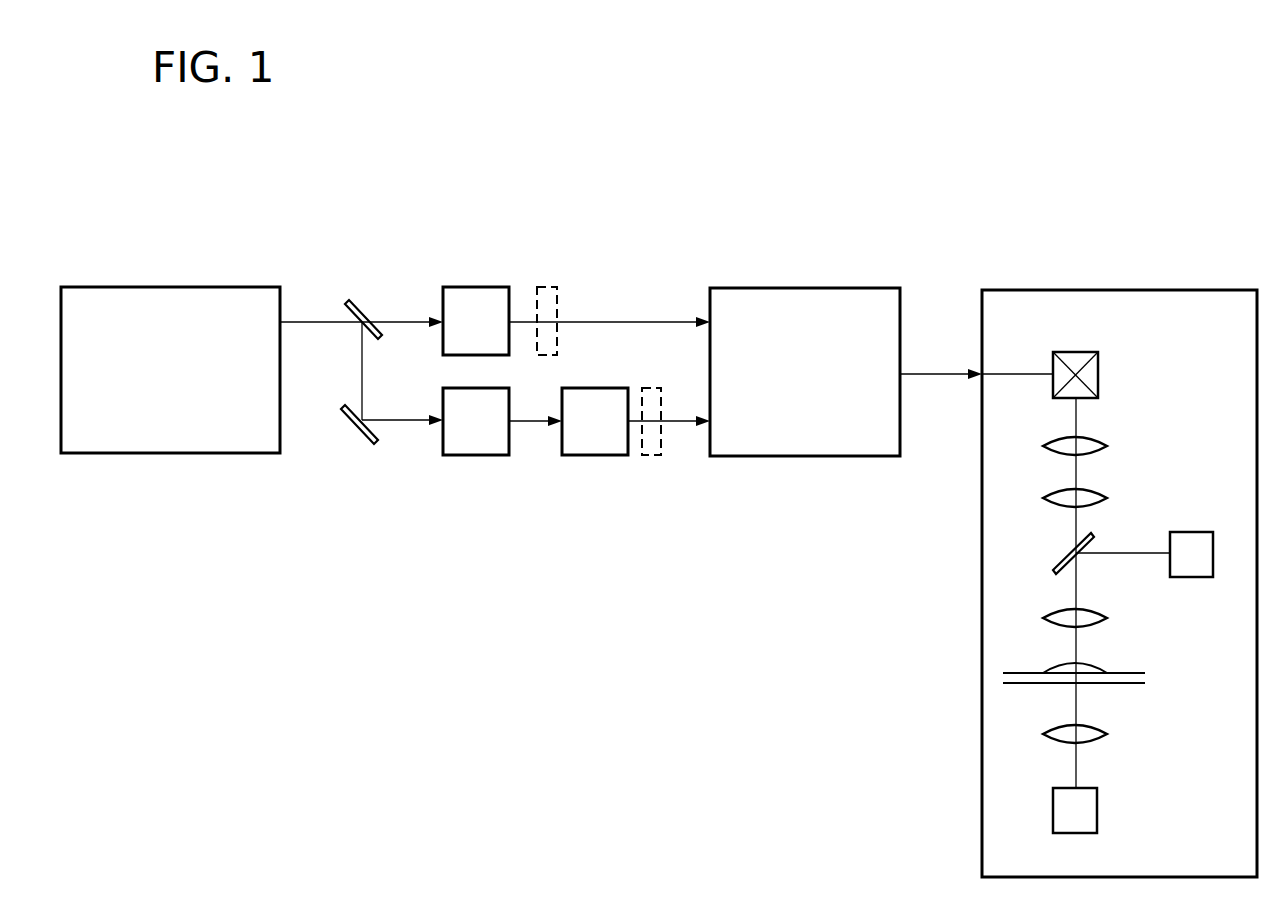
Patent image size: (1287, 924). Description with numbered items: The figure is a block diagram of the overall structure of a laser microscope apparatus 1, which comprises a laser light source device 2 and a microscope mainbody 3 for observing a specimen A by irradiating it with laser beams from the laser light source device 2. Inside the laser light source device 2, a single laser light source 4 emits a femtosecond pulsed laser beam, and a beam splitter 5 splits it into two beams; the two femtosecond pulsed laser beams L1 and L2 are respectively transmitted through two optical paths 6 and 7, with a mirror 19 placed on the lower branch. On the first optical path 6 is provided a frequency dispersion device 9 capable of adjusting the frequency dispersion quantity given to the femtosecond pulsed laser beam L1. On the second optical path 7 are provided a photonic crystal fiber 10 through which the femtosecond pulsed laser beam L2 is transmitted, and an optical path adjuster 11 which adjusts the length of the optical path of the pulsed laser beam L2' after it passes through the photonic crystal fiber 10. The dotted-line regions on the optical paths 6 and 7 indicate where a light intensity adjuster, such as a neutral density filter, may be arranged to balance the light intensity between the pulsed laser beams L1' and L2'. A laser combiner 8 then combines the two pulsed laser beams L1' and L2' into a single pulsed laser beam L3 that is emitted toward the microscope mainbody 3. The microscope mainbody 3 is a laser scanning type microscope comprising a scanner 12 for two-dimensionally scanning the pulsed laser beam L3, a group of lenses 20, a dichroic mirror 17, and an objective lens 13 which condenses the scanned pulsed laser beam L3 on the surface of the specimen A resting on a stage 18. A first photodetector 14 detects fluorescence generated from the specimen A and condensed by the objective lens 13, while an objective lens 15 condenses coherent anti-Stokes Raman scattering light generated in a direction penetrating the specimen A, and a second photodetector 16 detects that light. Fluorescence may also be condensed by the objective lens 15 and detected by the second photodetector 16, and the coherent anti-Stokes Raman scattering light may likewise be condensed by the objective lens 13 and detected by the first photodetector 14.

The laser microscope apparatus 1 is at (1128, 181).
The laser light source device 2 is at (610, 135).
The microscope mainbody 3 is at (1207, 277).
The laser light source 4 is at (170, 287).
The beam splitter 5 is at (356, 300).
The first optical path 6 is at (427, 163).
The second optical path 7 is at (442, 508).
The laser combiner 8 is at (812, 288).
The frequency dispersion device 9 is at (475, 287).
The photonic crystal fiber 10 is at (478, 455).
The optical path adjuster 11 is at (595, 457).
The scanner 12 is at (1098, 375).
The objective lens 13 is at (1055, 614).
The first photodetector 14 is at (1195, 578).
The objective lens 15 is at (1107, 734).
The second photodetector 16 is at (1097, 807).
The dichroic mirror 17 is at (1060, 556).
The stage 18 is at (1018, 684).
The mirror 19 is at (362, 435).
The group of lenses 20 is at (1100, 444).
The specimen A is at (1090, 668).
The femtosecond pulsed laser beam L1 is at (406, 280).
The femtosecond pulsed laser beam L2 is at (401, 467).
The pulsed laser beam L1' is at (667, 280).
The pulsed laser beam L2' is at (685, 473).
The pulsed laser beam L3 is at (937, 372).